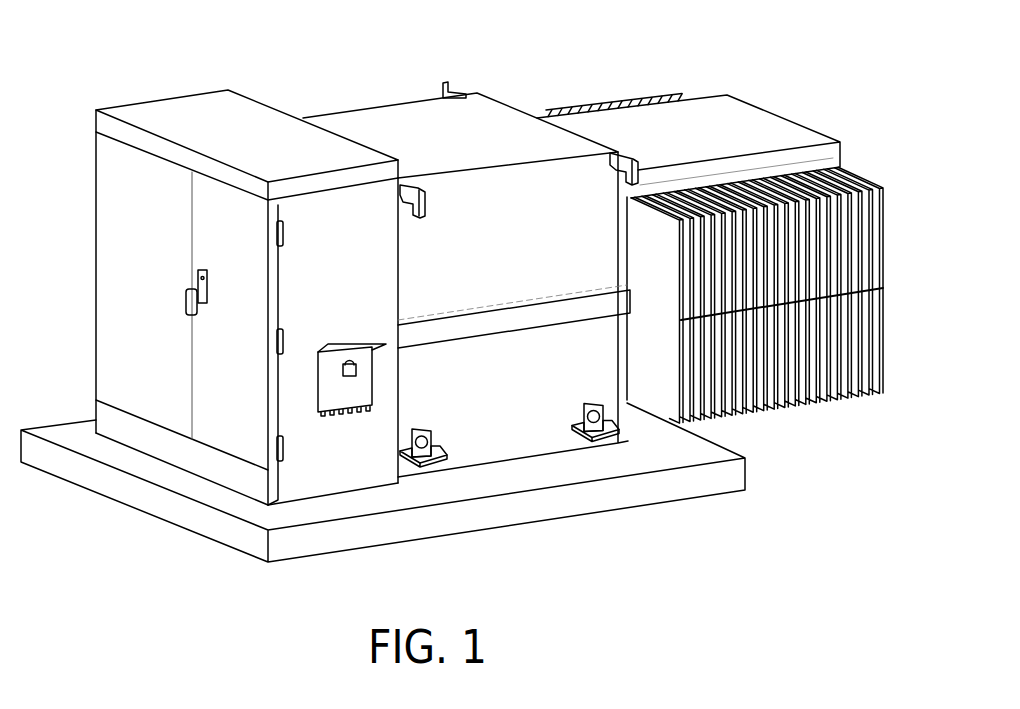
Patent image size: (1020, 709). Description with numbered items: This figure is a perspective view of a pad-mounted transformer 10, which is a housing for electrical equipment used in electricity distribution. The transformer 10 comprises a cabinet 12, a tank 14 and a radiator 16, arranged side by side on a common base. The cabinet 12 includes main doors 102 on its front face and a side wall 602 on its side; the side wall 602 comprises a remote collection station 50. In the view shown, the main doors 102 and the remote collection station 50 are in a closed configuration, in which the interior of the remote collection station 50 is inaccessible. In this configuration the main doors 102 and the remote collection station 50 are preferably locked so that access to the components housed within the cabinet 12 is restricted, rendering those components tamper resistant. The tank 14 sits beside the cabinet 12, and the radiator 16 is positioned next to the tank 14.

The transformer 10 is at (596, 68).
The cabinet 12 is at (363, 490).
The tank 14 is at (508, 460).
The radiator 16 is at (808, 402).
The remote collection station 50 is at (334, 432).
The main doors 102 is at (165, 245).
The side wall 602 is at (362, 289).